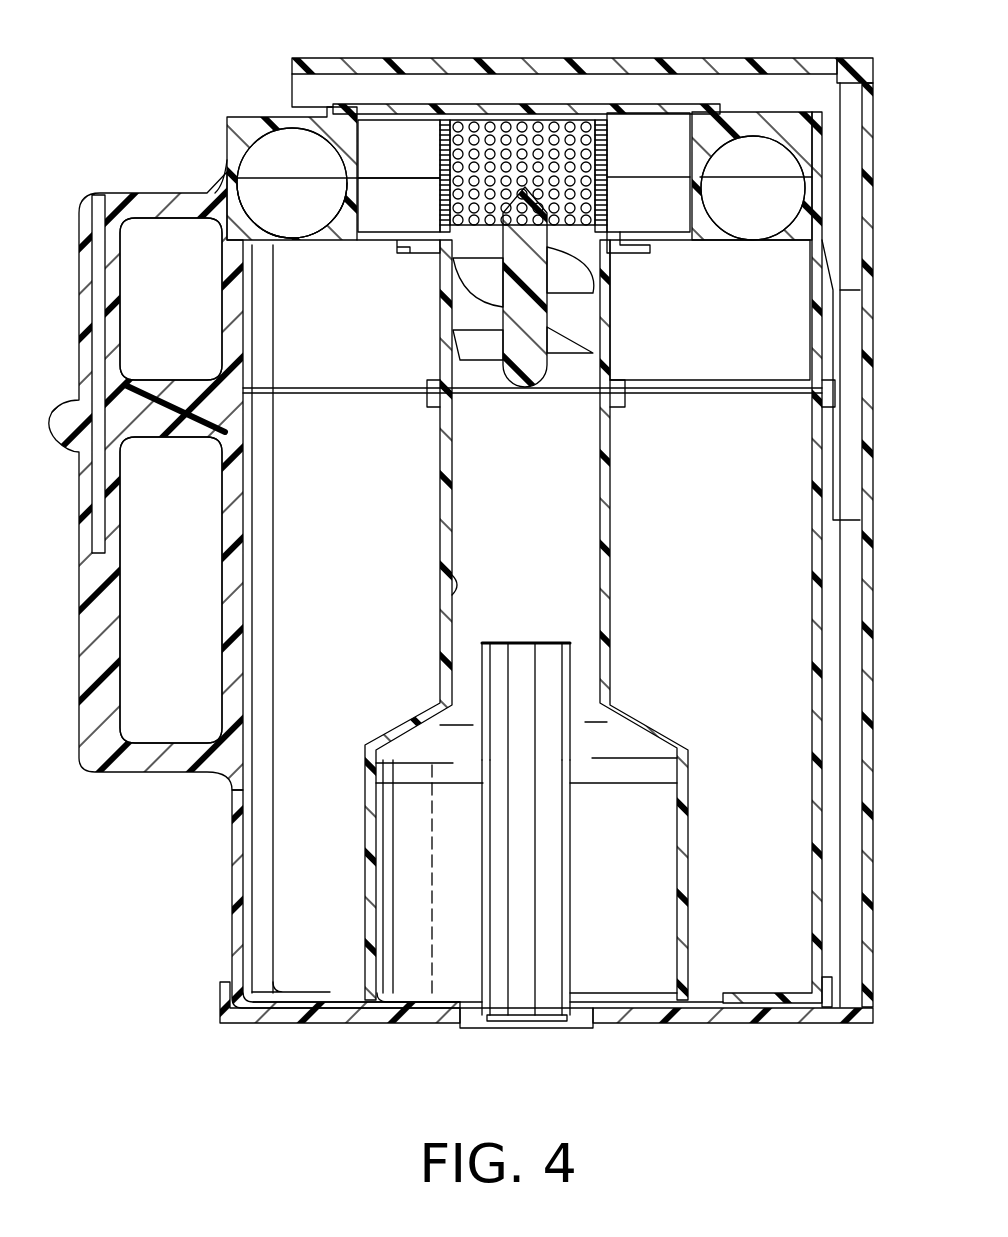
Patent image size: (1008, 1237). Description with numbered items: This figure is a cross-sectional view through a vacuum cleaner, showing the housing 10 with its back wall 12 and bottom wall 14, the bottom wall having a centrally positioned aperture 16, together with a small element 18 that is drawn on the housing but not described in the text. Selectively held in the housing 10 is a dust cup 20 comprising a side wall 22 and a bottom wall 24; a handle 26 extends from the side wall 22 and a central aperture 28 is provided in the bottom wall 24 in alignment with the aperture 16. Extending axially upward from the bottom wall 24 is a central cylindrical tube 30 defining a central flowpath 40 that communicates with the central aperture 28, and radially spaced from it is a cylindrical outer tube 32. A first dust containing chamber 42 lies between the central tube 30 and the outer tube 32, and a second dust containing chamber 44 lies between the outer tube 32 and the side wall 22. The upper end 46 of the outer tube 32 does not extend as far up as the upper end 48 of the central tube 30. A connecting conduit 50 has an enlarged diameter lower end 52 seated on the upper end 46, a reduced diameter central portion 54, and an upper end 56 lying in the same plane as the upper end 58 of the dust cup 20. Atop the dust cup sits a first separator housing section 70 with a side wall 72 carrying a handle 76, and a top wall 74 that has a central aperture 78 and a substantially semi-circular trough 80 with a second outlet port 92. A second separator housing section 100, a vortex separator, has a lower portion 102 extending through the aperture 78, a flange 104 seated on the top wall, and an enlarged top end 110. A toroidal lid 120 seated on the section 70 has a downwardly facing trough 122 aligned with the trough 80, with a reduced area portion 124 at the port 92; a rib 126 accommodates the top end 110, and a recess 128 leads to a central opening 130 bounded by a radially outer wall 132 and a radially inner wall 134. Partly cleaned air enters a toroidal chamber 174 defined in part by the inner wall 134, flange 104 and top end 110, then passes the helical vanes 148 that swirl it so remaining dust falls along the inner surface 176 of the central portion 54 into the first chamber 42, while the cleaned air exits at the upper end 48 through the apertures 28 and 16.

The housing 10 is at (573, 547).
The back wall 12 is at (876, 448).
The bottom wall 14 is at (645, 1020).
The central aperture 16 is at (498, 1022).
The locating tab 18 is at (812, 390).
The dust cup 20 is at (220, 903).
The side wall 22 is at (822, 662).
The bottom wall 24 is at (315, 1009).
The handle 26 is at (110, 602).
The central aperture 28 is at (547, 1016).
The central cylindrical tube 30 is at (570, 948).
The cylindrical outer tube 32 is at (678, 965).
The central flowpath 40 is at (429, 881).
The first dust containing chamber 42 is at (397, 895).
The second dust containing chamber 44 is at (812, 836).
The upper end of the outer tube 46 is at (690, 790).
The upper end of the central tube 48 is at (557, 645).
The connecting conduit 50 is at (625, 580).
The enlarged diameter lower end 52 is at (365, 760).
The reduced diameter central portion 54 is at (440, 520).
The upper end of the connecting conduit 56 is at (613, 410).
The upper end of the dust cup 58 is at (235, 397).
The first separator housing section 70 is at (218, 322).
The side wall 72 is at (818, 322).
The top wall 74 is at (286, 243).
The handle 76 is at (82, 238).
The central aperture 78 is at (430, 252).
The trough 80 is at (320, 232).
The second outlet port 92 is at (710, 310).
The second separator housing section 100 is at (620, 314).
The lower portion 102 is at (440, 330).
The flange 104 is at (620, 233).
The enlarged top end 110 is at (590, 108).
The toroidal lid 120 is at (222, 133).
The trough 122 is at (290, 140).
The reduced area portion 124 is at (815, 150).
The rib 126 is at (330, 104).
The recess 128 is at (357, 118).
The central opening 130 is at (672, 128).
The radially outer wall 132 is at (222, 150).
The radially inner wall 134 is at (360, 205).
The helical shaped vanes 148 is at (585, 285).
The toroidal chamber 174 is at (407, 126).
The inner surface 176 is at (452, 585).